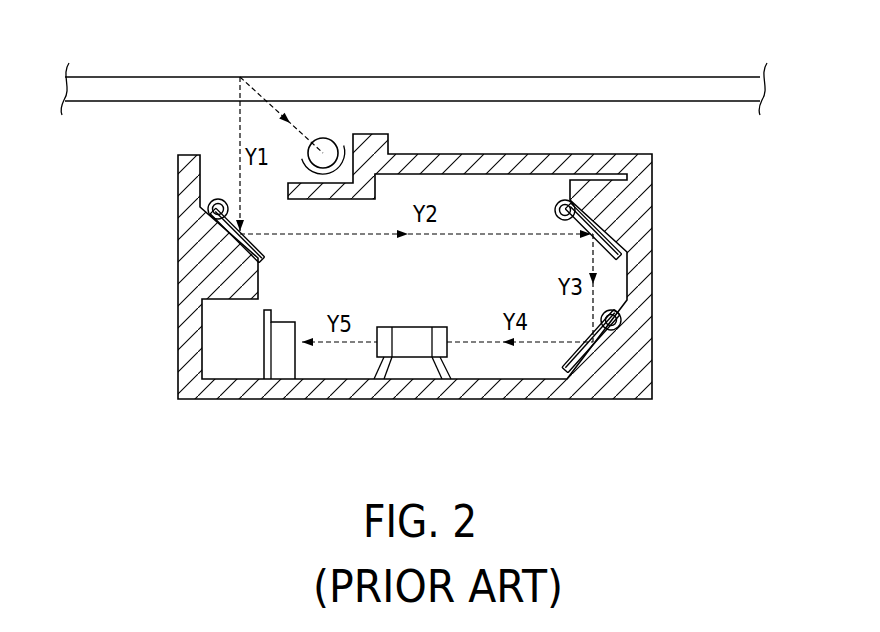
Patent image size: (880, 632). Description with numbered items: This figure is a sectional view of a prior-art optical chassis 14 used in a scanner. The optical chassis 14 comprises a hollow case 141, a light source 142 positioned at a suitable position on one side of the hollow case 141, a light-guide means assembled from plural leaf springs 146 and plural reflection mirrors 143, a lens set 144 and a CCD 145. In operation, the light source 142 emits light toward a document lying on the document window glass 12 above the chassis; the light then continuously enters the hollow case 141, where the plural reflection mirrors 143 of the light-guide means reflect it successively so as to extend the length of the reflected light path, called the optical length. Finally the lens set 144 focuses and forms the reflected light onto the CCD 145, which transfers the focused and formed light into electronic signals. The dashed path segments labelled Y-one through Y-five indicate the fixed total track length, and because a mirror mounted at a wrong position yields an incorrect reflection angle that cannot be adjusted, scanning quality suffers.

The document window glass 12 is at (447, 77).
The optical chassis 14 is at (141, 312).
The hollow case 141 is at (178, 366).
The light source 142 is at (325, 139).
The reflection mirrors 143 is at (226, 226).
The lens set 144 is at (405, 350).
The CCD 145 is at (287, 362).
The leaf springs 146 is at (218, 199).